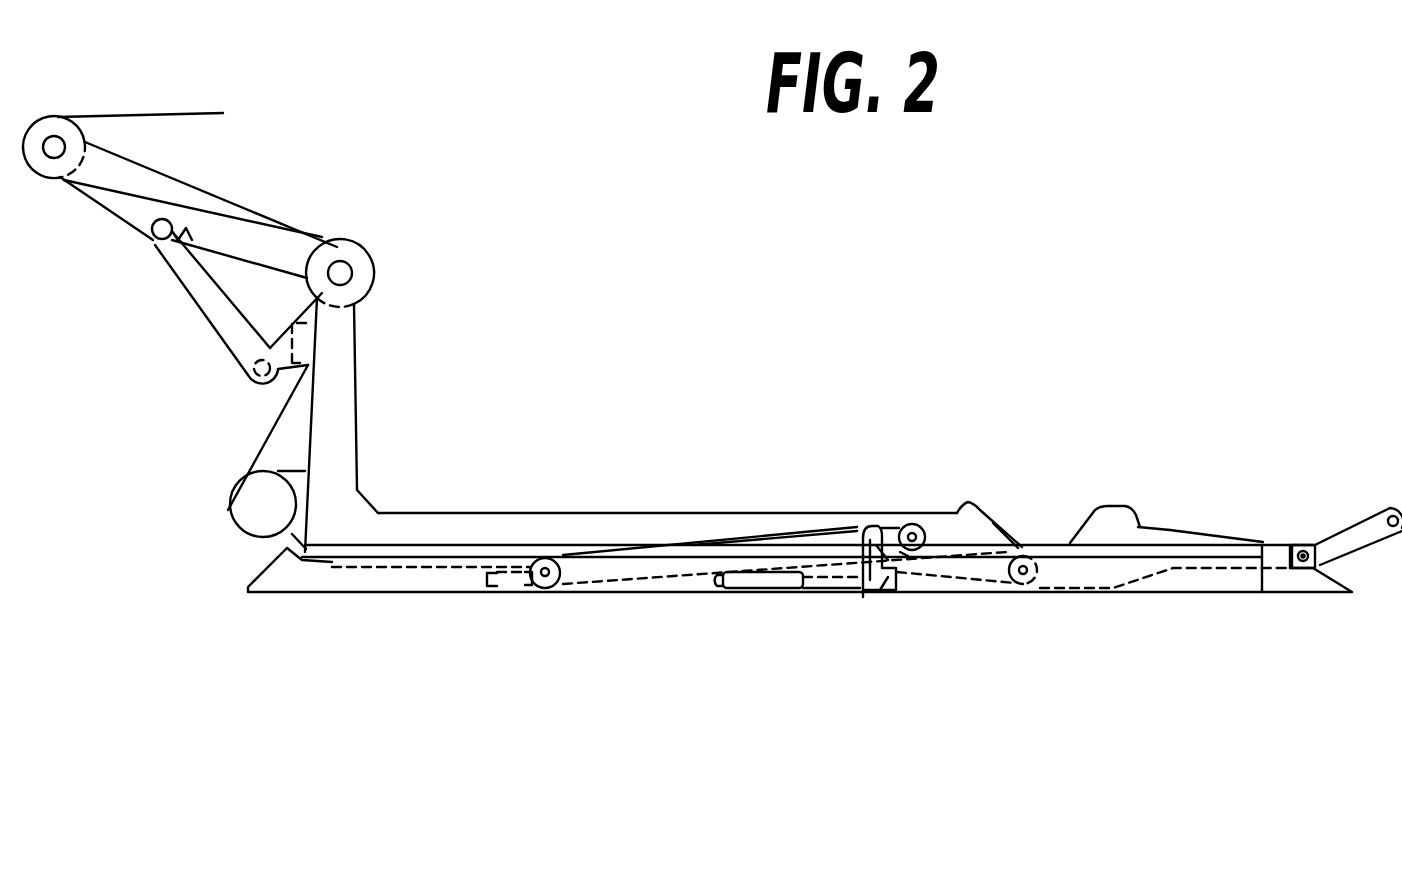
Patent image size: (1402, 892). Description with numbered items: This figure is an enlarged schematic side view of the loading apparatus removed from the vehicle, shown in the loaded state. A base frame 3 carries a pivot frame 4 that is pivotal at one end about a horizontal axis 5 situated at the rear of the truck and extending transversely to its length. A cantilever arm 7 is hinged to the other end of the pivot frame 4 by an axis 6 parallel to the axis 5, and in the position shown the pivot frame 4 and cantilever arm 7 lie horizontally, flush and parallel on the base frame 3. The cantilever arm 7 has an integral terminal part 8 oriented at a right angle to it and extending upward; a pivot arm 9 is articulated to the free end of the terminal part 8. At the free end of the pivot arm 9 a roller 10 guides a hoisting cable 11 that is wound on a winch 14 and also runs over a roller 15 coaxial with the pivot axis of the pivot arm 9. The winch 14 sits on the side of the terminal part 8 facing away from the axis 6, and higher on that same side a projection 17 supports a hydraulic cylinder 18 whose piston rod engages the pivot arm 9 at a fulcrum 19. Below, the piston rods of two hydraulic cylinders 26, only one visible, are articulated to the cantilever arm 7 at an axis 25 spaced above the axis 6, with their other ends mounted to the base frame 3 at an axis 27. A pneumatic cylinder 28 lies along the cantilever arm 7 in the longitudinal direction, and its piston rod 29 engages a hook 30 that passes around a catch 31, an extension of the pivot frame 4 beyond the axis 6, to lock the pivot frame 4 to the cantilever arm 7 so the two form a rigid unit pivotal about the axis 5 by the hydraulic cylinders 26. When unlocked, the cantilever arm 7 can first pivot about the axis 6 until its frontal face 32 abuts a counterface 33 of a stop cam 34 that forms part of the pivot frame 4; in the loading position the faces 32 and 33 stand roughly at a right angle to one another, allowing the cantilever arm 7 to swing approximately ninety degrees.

The base frame 3 is at (680, 583).
The pivot frame 4 is at (1173, 535).
The horizontal axis 5 is at (1305, 547).
The axis 6 is at (1025, 580).
The cantilever arm 7 is at (573, 523).
The terminal part 8 is at (342, 412).
The pivot arm 9 is at (127, 203).
The roller 10 is at (57, 122).
The hoisting cable 11 is at (312, 230).
The winch 14 is at (250, 510).
The roller 15 is at (362, 266).
The projection 17 is at (283, 378).
The hydraulic cylinder 18 is at (197, 292).
The fulcrum 19 is at (150, 240).
The axis 25 is at (917, 527).
The hydraulic cylinders 26 is at (820, 537).
The axis 27 is at (545, 580).
The pneumatic cylinder 28 is at (762, 578).
The piston rod 29 is at (837, 578).
The hook 30 is at (866, 592).
The catch 31 is at (925, 590).
The frontal face 32 is at (993, 525).
The counterface 33 is at (1093, 515).
The stop cam 34 is at (1112, 514).